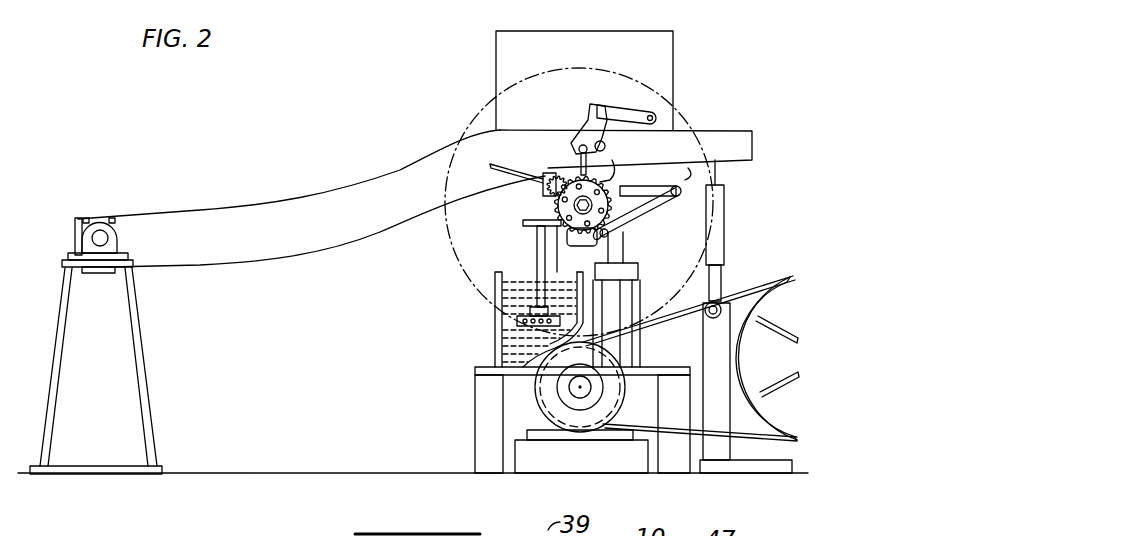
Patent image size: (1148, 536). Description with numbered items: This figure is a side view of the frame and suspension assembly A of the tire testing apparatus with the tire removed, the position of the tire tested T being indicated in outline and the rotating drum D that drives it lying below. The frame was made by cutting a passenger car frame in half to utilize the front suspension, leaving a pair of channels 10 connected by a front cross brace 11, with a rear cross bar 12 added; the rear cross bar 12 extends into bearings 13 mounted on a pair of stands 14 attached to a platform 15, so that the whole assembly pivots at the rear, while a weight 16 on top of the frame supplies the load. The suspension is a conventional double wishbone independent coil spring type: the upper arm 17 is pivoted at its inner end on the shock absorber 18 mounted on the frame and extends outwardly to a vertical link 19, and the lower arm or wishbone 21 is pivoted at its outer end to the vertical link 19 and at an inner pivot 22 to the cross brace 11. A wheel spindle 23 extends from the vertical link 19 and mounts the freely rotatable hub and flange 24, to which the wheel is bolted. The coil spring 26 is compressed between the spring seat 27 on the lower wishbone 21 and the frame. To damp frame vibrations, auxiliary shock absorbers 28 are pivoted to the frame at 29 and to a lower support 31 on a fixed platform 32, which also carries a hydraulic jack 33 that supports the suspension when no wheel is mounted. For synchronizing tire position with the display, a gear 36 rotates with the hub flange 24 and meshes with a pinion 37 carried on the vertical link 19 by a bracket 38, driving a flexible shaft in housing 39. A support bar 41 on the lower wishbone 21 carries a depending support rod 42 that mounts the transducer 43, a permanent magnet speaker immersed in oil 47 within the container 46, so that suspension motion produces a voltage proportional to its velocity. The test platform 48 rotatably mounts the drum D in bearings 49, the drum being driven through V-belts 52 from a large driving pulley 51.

The channels 10 is at (753, 142).
The front cross brace 11 is at (688, 168).
The rear cross bar 12 is at (96, 238).
The bearings 13 is at (100, 230).
The stands 14 is at (113, 266).
The platform 15 is at (67, 470).
The weight 16 is at (600, 40).
The upper arm 17 is at (595, 122).
The shock absorber 18 is at (632, 112).
The vertical link 19 is at (580, 160).
The lower arm or wishbone 21 is at (622, 224).
The inner pivot 22 is at (680, 192).
The wheel spindle 23 is at (576, 205).
The hub and flange 24 is at (626, 242).
The coil spring 26 is at (612, 168).
The spring seat 27 is at (630, 210).
The auxiliary shock absorbers 28 is at (718, 250).
The frame pivot 29 is at (718, 168).
The lower support 31 is at (703, 332).
The fixed platform 32 is at (740, 468).
The hydraulic jack 33 is at (633, 353).
The gear 36 is at (560, 207).
The pinion 37 is at (560, 178).
The bracket 38 is at (546, 190).
The housing 39 is at (525, 170).
The support bar 41 is at (556, 229).
The support rod 42 is at (535, 239).
The transducer 43 is at (516, 321).
The container 46 is at (496, 280).
The oil 47 is at (515, 283).
The test platform 48 is at (557, 455).
The bearings 49 is at (563, 388).
The large driving pulley 51 is at (742, 359).
The V-belts 52 is at (755, 292).
The frame and suspension assembly A is at (363, 178).
The tire tested T is at (477, 112).
The drum D is at (540, 412).